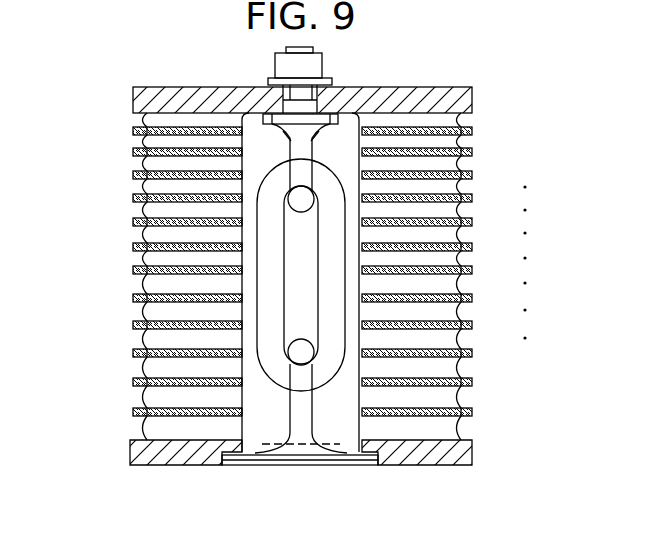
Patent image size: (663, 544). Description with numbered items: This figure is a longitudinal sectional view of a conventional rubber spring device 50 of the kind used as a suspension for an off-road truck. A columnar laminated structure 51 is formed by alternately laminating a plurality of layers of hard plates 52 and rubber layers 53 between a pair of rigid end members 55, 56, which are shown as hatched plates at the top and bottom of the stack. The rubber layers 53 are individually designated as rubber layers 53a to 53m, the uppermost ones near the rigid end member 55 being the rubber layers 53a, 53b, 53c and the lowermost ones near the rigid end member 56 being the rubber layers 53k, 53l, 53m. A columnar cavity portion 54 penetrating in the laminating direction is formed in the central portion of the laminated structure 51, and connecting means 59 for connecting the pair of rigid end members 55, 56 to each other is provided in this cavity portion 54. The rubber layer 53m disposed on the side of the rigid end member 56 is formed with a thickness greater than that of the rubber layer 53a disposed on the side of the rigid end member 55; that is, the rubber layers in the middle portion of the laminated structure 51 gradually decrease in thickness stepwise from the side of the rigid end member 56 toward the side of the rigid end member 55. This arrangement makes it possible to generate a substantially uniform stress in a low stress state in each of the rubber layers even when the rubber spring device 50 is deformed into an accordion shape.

The rubber spring device 50 is at (100, 77).
The laminated structure 51 is at (80, 213).
The hard plates 52 is at (135, 131).
The rubber layers 53 is at (563, 108).
The rubber layer 53a is at (462, 118).
The rubber layer 53b is at (462, 140).
The rubber layer 53c is at (462, 162).
The rubber layer 53k is at (463, 365).
The rubber layer 53l is at (463, 394).
The rubber layer 53m is at (463, 425).
The cavity portion 54 is at (335, 420).
The rigid end member 55 is at (433, 97).
The rigid end member 56 is at (166, 455).
The connecting means 59 is at (254, 417).